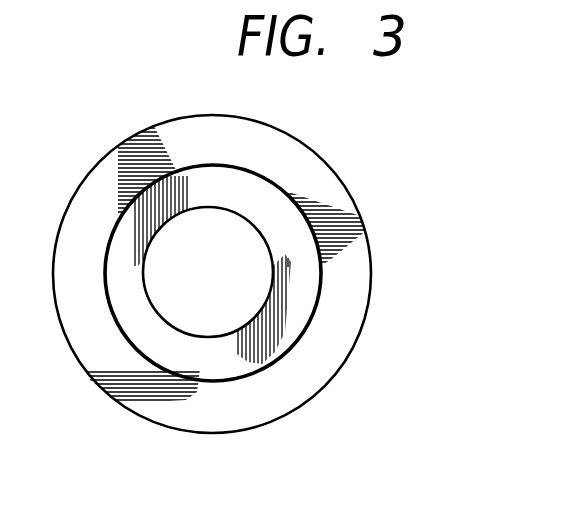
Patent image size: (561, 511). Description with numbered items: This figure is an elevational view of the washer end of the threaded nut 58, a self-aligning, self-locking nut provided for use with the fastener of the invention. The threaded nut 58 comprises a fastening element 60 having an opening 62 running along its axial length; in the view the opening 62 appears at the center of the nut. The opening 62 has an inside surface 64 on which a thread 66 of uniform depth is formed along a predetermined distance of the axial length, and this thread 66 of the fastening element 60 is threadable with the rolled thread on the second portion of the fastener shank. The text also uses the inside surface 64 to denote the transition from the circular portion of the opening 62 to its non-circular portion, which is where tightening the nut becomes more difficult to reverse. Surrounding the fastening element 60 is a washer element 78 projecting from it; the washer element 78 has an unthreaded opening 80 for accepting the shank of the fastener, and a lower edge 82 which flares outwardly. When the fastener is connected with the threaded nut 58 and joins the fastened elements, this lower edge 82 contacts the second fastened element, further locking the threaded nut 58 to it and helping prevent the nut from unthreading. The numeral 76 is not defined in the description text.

The threaded nut 58 is at (104, 153).
The fastening element 60 is at (327, 192).
The opening 62 is at (230, 281).
The inside surface 64 is at (164, 316).
The thread 66 is at (272, 256).
The passage 76 is at (178, 332).
The washer element 78 is at (120, 360).
The unthreaded opening 80 is at (108, 238).
The lower edge 82 is at (77, 289).